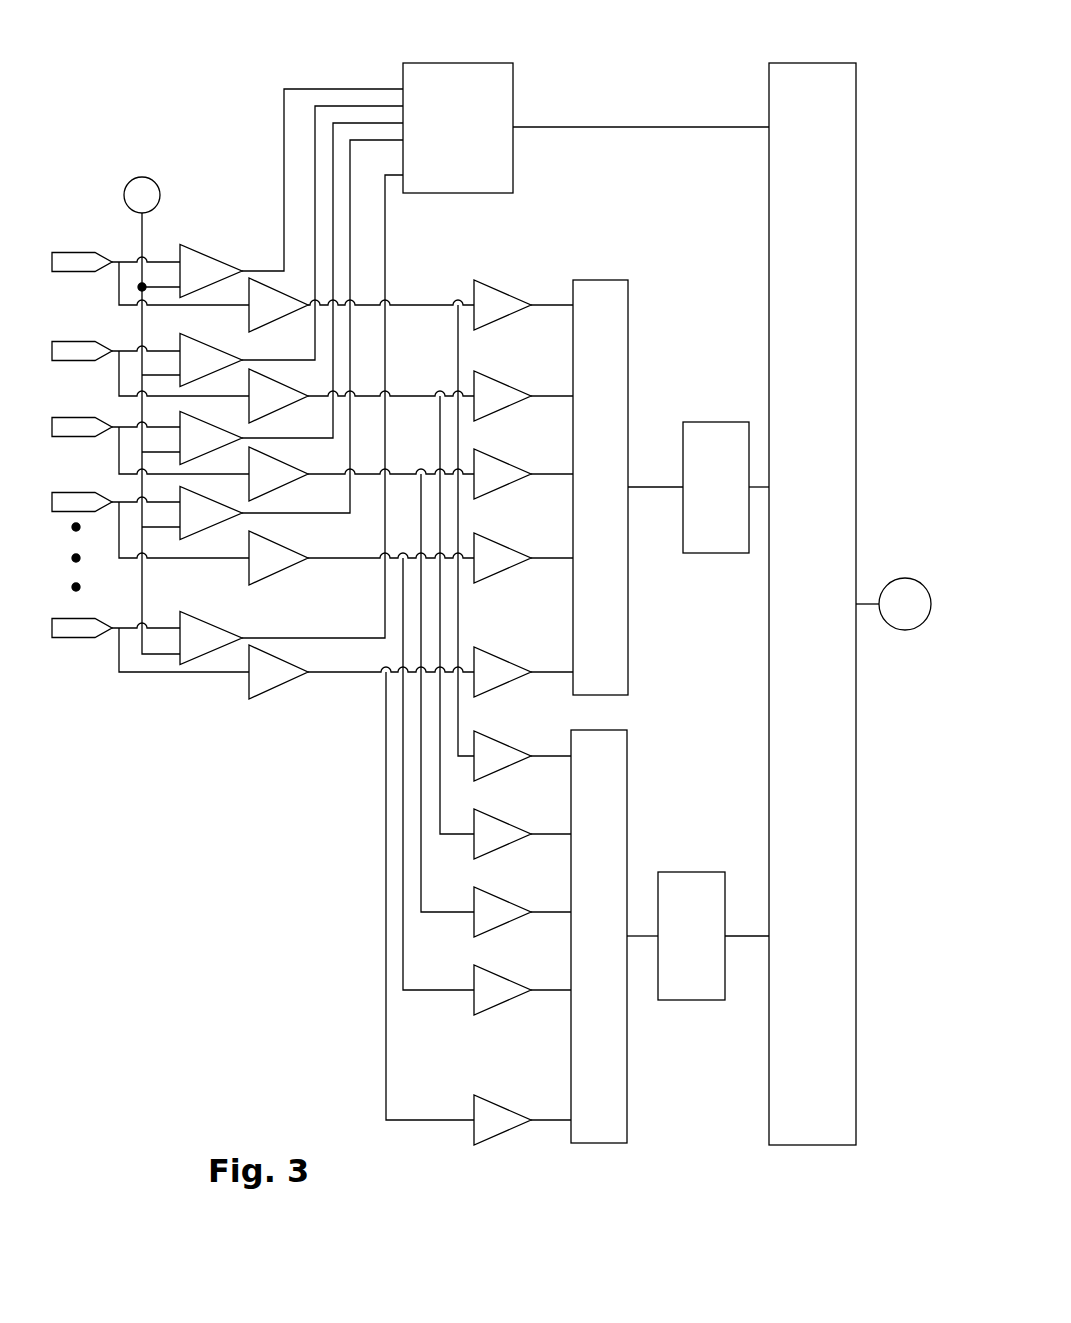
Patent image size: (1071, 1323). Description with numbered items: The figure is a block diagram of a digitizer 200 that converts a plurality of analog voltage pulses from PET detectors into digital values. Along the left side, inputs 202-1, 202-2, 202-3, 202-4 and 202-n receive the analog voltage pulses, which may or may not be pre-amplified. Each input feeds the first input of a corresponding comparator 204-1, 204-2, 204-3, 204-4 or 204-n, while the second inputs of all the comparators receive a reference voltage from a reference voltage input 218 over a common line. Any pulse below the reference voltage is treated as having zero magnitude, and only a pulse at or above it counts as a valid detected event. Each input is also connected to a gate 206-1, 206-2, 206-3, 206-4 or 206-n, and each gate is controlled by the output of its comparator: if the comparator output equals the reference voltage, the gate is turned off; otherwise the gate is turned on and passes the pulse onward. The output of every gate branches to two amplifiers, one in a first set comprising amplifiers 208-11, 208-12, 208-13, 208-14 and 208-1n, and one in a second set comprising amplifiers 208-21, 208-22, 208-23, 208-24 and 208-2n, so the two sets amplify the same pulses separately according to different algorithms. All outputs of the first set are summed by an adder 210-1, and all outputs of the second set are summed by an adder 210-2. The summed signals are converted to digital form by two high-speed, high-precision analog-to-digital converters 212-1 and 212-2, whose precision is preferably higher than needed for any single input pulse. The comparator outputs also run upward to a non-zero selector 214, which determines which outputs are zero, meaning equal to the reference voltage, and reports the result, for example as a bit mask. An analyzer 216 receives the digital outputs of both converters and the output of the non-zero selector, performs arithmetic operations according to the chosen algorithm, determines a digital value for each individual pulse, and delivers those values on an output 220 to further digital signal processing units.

The digitizer 200 is at (491, 579).
The input 202-1 is at (150, 279).
The input 202-2 is at (150, 369).
The input 202-3 is at (150, 446).
The input 202-4 is at (150, 526).
The input 202-n is at (150, 646).
The comparator 204-1 is at (272, 193).
The comparator 204-2 is at (272, 246).
The comparator 204-3 is at (272, 294).
The comparator 204-4 is at (272, 340).
The comparator 204-n is at (291, 420).
The gate 206-1 is at (361, 517).
The gate 206-2 is at (361, 601).
The gate 206-3 is at (361, 679).
The gate 206-4 is at (361, 760).
The gate 206-n is at (361, 882).
The amplifier 208-11 is at (508, 293).
The amplifier 208-12 is at (506, 384).
The amplifier 208-13 is at (506, 462).
The amplifier 208-14 is at (506, 546).
The amplifier 208-1n is at (506, 660).
The amplifier 208-21 is at (506, 746).
The amplifier 208-22 is at (506, 824).
The amplifier 208-23 is at (506, 902).
The amplifier 208-24 is at (506, 980).
The amplifier 208-2n is at (506, 1110).
The adder 210-1 is at (628, 487).
The adder 210-2 is at (614, 936).
The analog-to-digital converter 212-1 is at (726, 487).
The analog-to-digital converter 212-2 is at (713, 936).
The non-zero selector 214 is at (586, 128).
The analyzer 216 is at (812, 604).
The reference voltage input 218 is at (162, 415).
The output 220 is at (905, 578).